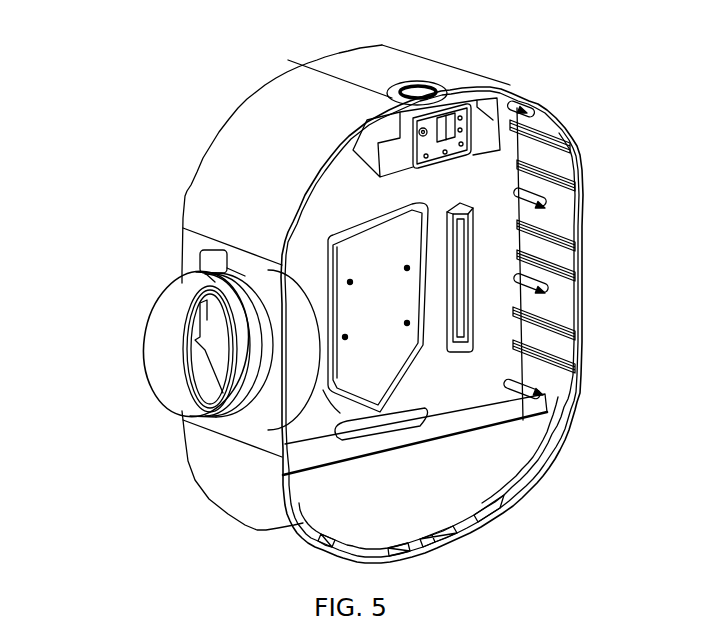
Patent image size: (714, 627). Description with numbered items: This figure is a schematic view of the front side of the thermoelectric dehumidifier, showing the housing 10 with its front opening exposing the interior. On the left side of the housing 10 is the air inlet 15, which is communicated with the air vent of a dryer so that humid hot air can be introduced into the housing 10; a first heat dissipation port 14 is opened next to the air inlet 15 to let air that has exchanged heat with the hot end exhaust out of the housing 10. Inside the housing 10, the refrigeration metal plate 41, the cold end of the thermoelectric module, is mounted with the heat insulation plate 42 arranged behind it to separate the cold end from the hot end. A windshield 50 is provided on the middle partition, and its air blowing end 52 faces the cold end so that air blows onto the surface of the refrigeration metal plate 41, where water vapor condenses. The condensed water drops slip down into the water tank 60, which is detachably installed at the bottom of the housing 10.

The housing 10 is at (265, 116).
The first heat dissipation port 14 is at (203, 264).
The air inlet 15 is at (169, 356).
The refrigeration metal plate 41 is at (372, 372).
The heat insulation plate 42 is at (325, 371).
The windshield 50 is at (476, 291).
The air blowing end 52 is at (446, 258).
The water tank 60 is at (476, 484).